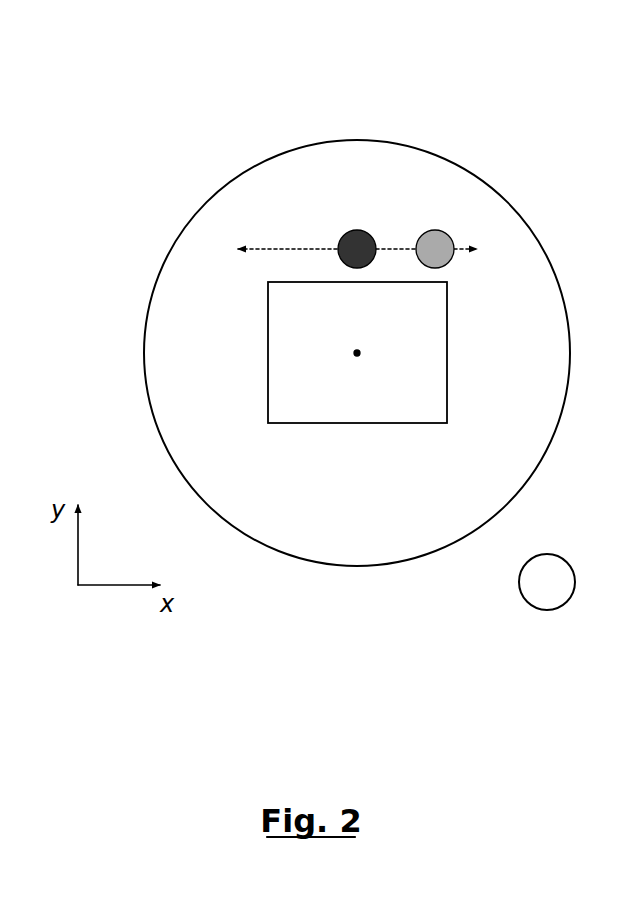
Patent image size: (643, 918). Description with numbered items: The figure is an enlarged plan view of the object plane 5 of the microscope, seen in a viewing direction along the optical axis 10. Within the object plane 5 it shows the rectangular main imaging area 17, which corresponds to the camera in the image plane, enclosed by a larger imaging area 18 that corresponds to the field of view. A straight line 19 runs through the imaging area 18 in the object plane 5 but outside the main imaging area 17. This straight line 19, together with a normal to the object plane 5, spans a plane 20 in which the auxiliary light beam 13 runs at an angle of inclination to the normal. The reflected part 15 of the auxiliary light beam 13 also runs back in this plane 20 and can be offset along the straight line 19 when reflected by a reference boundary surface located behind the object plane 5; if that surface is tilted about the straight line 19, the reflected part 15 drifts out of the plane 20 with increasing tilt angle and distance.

The object plane 5 is at (547, 582).
The optical axis 10 is at (354, 353).
The auxiliary light beam 13 is at (354, 226).
The reflected part 15 is at (440, 226).
The main imaging area 17 is at (312, 426).
The imaging area 18 is at (344, 568).
The straight line 19 is at (292, 245).
The plane 20 is at (397, 244).